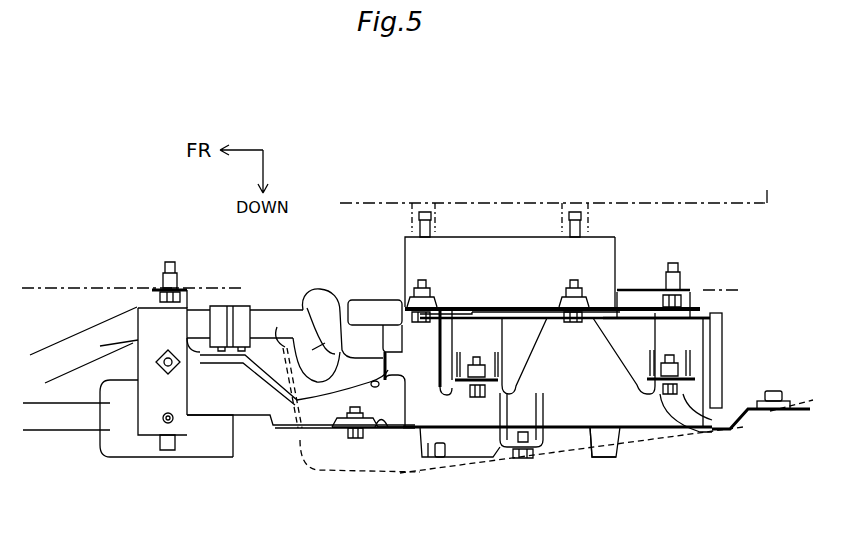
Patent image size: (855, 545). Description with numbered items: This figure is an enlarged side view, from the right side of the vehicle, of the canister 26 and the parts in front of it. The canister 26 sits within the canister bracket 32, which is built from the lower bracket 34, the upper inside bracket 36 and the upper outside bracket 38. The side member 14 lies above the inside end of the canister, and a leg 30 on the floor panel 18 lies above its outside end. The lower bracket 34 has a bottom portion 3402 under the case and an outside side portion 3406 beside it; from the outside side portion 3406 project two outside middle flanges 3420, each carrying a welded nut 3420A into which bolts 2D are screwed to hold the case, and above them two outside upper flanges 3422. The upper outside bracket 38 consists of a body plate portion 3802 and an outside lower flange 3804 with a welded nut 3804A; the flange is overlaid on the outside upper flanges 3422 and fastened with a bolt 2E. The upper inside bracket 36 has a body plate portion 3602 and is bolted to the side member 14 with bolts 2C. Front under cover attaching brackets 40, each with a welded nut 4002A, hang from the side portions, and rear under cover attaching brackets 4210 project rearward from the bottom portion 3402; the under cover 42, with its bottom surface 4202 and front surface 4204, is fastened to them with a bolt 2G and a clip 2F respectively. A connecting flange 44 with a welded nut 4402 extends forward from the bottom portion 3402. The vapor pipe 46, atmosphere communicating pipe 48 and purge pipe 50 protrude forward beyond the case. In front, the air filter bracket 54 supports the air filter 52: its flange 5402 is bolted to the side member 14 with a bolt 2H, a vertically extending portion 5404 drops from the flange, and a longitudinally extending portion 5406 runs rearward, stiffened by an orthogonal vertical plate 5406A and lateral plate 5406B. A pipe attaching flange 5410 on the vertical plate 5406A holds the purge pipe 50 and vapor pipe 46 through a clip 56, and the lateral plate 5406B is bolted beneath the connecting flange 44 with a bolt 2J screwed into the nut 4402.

The side member 14 is at (62, 296).
The floor panel 18 is at (723, 206).
The canister 26 is at (637, 333).
The bolts 2C is at (687, 317).
The bolts 2D is at (687, 340).
The bolt 2E is at (568, 322).
The clip 2F is at (783, 410).
The bolt 2G is at (527, 460).
The bolt 2H is at (160, 303).
The bolt 2J is at (360, 438).
The leg 30 is at (412, 223).
The canister bracket 32 is at (620, 410).
The lower bracket 34 is at (588, 430).
The bottom portion 3402 is at (518, 442).
The outside side portion 3406 is at (617, 385).
The outside middle flanges 3420 is at (460, 390).
The nut 3420A is at (690, 400).
The outside upper flanges 3422 is at (440, 320).
The upper inside bracket 36 is at (633, 303).
The body plate portion 3602 is at (657, 280).
The upper outside bracket 38 is at (467, 250).
The body plate portion 3802 is at (603, 235).
The outside lower flange 3804 is at (450, 305).
The nut 3804A is at (560, 297).
The front under cover attaching brackets 40 is at (427, 450).
The nut 4002A is at (498, 457).
The under cover 42 is at (315, 430).
The bottom surface 4202 is at (440, 473).
The front surface 4204 is at (283, 376).
The rear under cover attaching brackets 4210 is at (757, 400).
The connecting flange 44 is at (387, 430).
The nut 4402 is at (307, 445).
The vapor pipe 46 is at (285, 310).
The atmosphere communicating pipe 48 is at (240, 430).
The purge pipe 50 is at (336, 300).
The air filter 52 is at (130, 457).
The air filter bracket 54 is at (155, 437).
The flange 5402 is at (150, 297).
The vertically extending portion 5404 is at (158, 398).
The longitudinally extending portion 5406 is at (283, 413).
The vertical plate 5406A is at (205, 403).
The lateral plate 5406B is at (297, 430).
The pipe attaching flange 5410 is at (190, 322).
The clip 56 is at (247, 348).